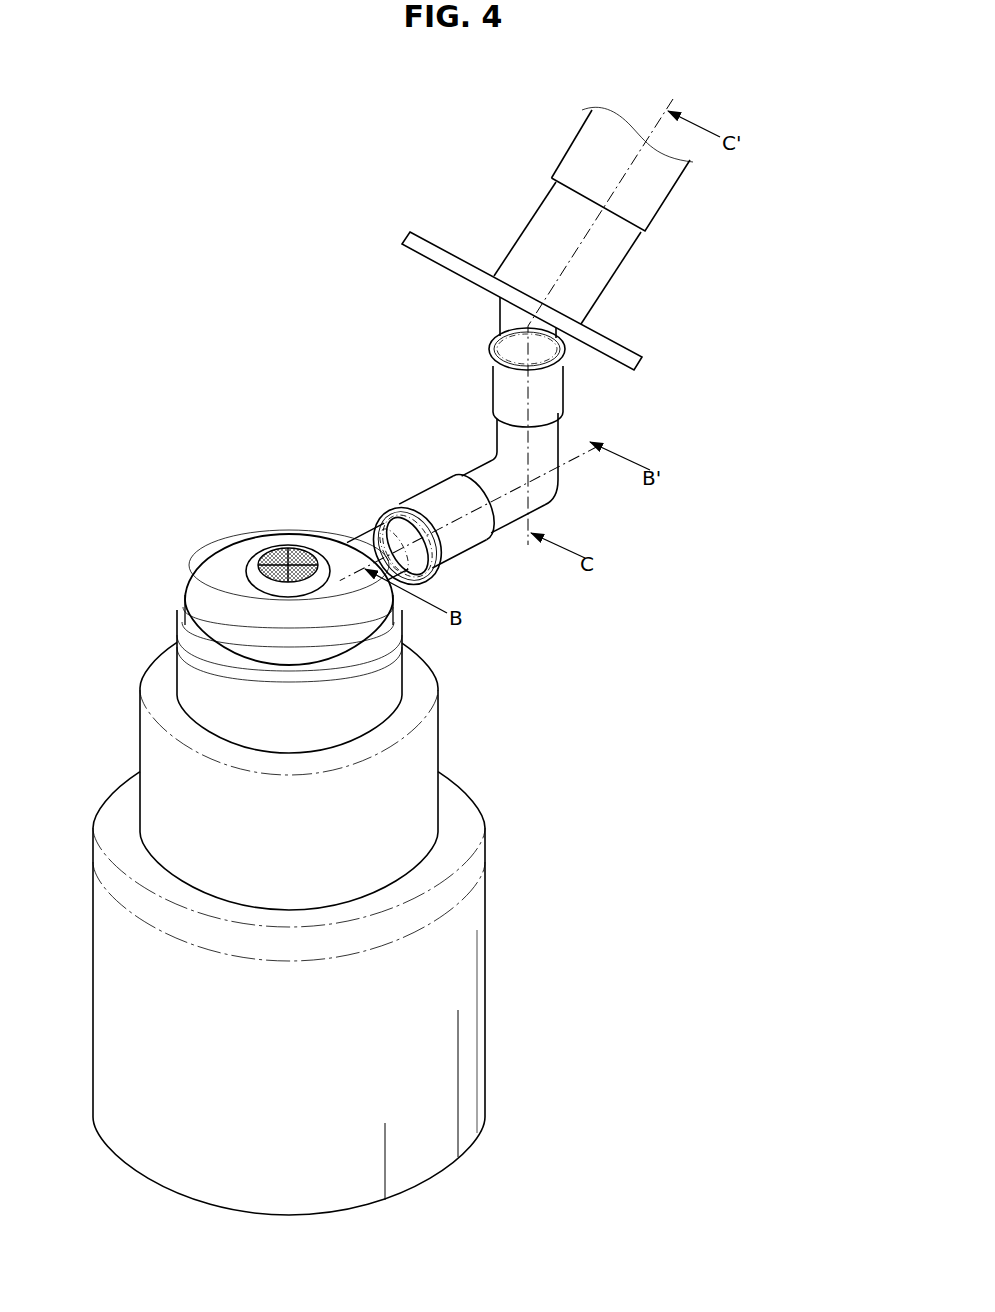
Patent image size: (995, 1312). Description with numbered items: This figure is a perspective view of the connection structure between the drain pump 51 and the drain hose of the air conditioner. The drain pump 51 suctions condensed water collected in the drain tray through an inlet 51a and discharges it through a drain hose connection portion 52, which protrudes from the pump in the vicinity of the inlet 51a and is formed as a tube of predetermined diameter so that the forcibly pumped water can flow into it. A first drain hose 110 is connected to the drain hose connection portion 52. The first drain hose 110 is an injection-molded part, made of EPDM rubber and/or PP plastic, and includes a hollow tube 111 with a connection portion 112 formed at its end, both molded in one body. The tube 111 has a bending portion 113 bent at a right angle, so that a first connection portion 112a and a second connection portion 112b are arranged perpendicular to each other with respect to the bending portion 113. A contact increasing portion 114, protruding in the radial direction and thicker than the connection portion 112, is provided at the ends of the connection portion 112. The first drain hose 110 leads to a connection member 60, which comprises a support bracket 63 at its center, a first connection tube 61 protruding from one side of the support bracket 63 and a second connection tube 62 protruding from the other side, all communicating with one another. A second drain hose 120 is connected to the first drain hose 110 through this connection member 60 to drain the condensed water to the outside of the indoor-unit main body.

The drain pump 51 is at (193, 678).
The inlet 51a is at (280, 552).
The drain hose connection portion 52 is at (358, 545).
The connection member 60 is at (403, 196).
The first connection tube 61 is at (508, 318).
The second connection tube 62 is at (527, 238).
The support bracket 63 is at (437, 258).
The first drain hose 110 is at (632, 410).
The tube 111 is at (504, 513).
The connection portion 112 is at (407, 380).
The first connection portion 112a is at (428, 502).
The second connection portion 112b is at (497, 382).
The bending portion 113 is at (558, 497).
The contact increasing portion 114 is at (382, 522).
The second drain hose 120 is at (578, 158).